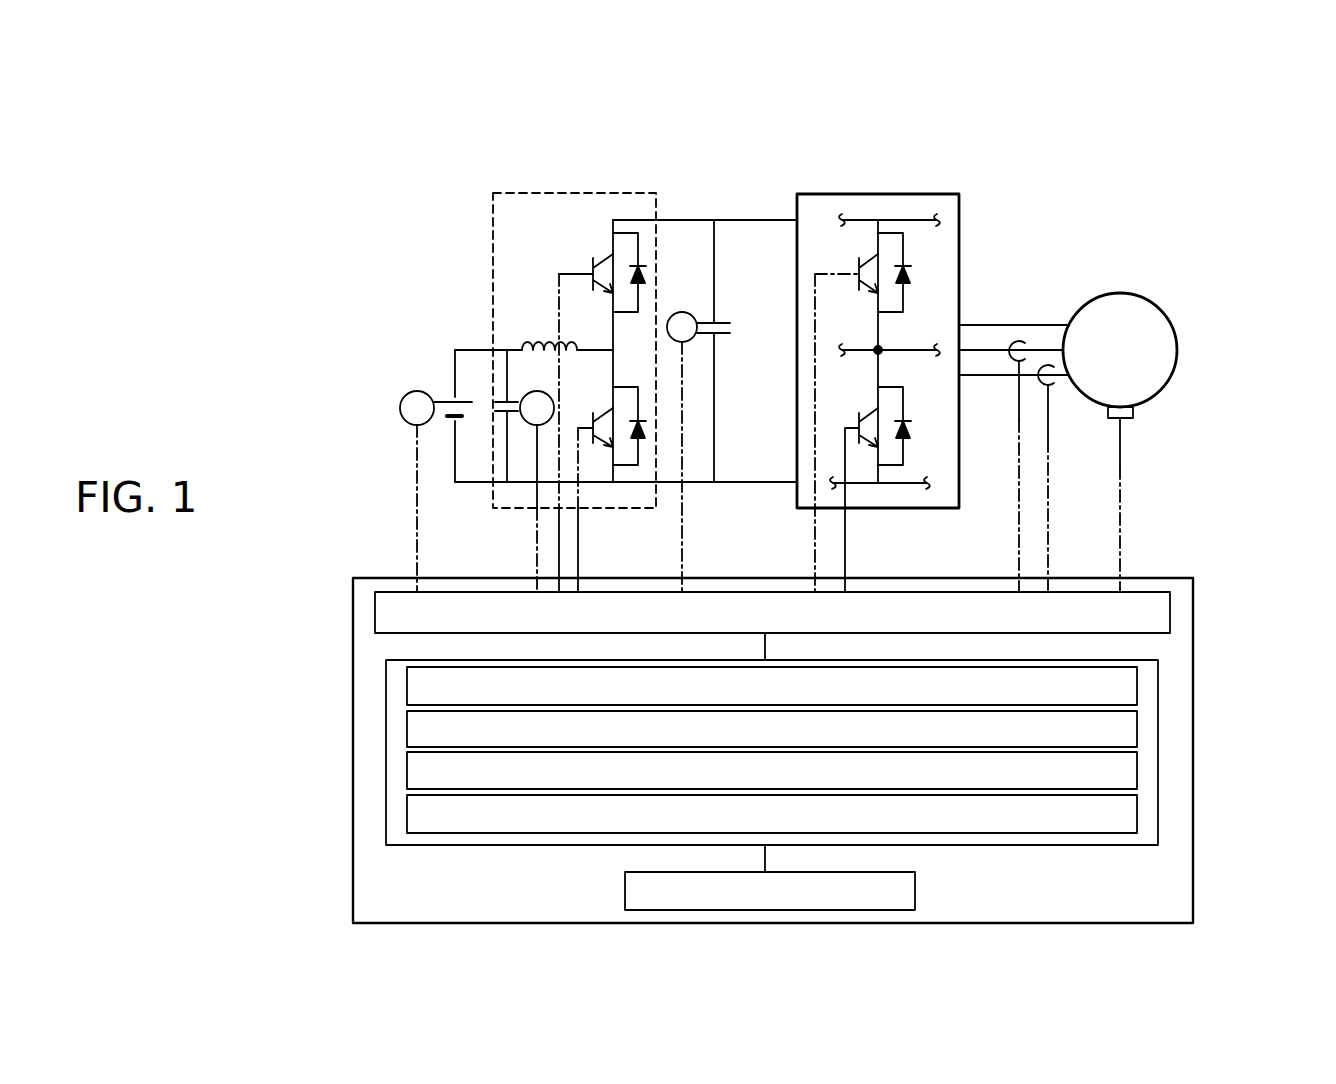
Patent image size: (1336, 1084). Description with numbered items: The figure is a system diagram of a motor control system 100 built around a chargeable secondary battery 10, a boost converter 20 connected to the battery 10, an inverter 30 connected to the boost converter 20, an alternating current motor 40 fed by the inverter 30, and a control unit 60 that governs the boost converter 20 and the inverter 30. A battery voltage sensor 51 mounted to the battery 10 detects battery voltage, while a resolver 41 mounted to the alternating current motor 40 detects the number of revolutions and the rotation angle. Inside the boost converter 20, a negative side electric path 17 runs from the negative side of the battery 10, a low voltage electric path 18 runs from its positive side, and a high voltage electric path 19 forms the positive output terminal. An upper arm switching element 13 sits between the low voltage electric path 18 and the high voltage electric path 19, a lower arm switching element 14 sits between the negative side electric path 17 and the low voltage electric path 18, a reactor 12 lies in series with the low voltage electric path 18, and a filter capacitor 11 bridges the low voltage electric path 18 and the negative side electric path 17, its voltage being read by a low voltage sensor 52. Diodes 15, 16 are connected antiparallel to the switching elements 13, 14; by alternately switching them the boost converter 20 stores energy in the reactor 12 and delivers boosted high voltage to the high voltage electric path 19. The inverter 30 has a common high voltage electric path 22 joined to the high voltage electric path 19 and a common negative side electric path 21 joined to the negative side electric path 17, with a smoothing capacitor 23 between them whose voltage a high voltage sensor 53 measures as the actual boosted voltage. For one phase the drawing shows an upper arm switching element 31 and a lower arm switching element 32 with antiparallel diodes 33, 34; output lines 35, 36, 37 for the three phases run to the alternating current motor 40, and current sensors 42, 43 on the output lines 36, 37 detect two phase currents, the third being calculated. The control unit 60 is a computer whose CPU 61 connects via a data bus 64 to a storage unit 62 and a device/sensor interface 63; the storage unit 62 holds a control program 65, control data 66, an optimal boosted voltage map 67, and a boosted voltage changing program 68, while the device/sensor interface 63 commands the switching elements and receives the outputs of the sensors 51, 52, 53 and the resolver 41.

The motor control system 100 is at (1200, 160).
The battery 10 is at (436, 401).
The filter capacitor 11 is at (499, 398).
The reactor 12 is at (537, 338).
The upper arm switching element 13 is at (593, 262).
The lower arm switching element 14 is at (596, 443).
The diode 15 is at (648, 278).
The diode 16 is at (640, 440).
The negative side electric path 17 is at (478, 483).
The low voltage electric path 18 is at (595, 347).
The high voltage electric path 19 is at (633, 220).
The boost converter 20 is at (528, 193).
The common negative side electric path 21 is at (700, 485).
The common high voltage electric path 22 is at (697, 220).
The smoothing capacitor 23 is at (728, 334).
The inverter 30 is at (895, 193).
The upper arm switching element 31 is at (855, 262).
The lower arm switching element 32 is at (857, 443).
The diode 33 is at (912, 278).
The diode 34 is at (916, 440).
The output line 35 is at (913, 349).
The output line 36 is at (977, 325).
The output line 37 is at (981, 376).
The alternating current motor 40 is at (1162, 310).
The resolver 41 is at (1133, 412).
The current sensor 42 is at (1022, 341).
The current sensor 43 is at (1052, 386).
The battery voltage sensor 51 is at (400, 413).
The low voltage sensor 52 is at (527, 391).
The high voltage sensor 53 is at (683, 312).
The control unit 60 is at (1195, 600).
The CPU 61 is at (915, 896).
The storage unit 62 is at (386, 742).
The device/sensor interface 63 is at (375, 612).
The data bus 64 is at (765, 858).
The control program 65 is at (1137, 818).
The control data 66 is at (1137, 775).
The optimal boosted voltage map 67 is at (1137, 732).
The boosted voltage changing program 68 is at (1137, 690).